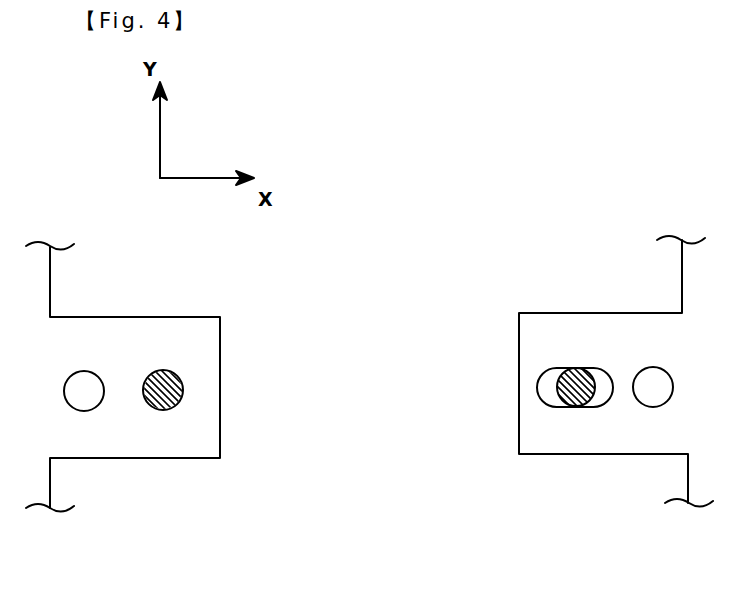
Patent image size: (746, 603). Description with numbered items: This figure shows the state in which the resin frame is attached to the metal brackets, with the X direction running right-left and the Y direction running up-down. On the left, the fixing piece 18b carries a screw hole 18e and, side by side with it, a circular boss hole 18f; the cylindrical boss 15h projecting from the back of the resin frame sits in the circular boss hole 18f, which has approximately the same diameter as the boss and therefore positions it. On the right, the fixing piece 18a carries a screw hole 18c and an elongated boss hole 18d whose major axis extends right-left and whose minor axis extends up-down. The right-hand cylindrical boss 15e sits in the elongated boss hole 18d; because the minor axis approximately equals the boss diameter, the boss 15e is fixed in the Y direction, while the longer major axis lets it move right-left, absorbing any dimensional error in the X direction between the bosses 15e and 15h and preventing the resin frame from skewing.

The fixing piece 18a is at (597, 313).
The fixing piece 18b is at (143, 459).
The screw hole 18c is at (655, 408).
The elongated boss hole 18d is at (600, 408).
The screw hole 18e is at (98, 372).
The circular boss hole 18f is at (178, 374).
The cylindrical boss 15e is at (557, 389).
The cylindrical boss 15h is at (176, 406).